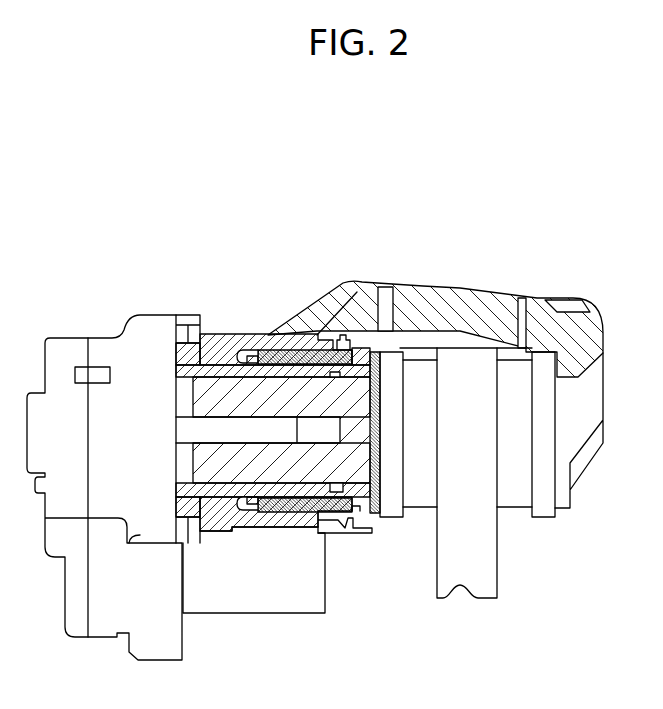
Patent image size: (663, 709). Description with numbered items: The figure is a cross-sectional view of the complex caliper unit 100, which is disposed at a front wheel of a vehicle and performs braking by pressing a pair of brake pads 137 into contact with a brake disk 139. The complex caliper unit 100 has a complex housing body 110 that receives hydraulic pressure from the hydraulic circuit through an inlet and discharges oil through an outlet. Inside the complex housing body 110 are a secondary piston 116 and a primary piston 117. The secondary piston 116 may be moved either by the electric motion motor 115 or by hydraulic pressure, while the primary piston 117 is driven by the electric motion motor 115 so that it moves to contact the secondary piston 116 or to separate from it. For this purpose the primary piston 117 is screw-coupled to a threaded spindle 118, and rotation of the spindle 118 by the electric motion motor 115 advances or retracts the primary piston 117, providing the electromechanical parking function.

The complex caliper unit 100 is at (315, 250).
The complex housing body 110 is at (358, 287).
The electric motion motor 115 is at (312, 587).
The secondary piston 116 is at (242, 500).
The primary piston 117 is at (285, 507).
The spindle 118 is at (228, 432).
The brake pads 137 is at (513, 427).
The brake disk 139 is at (483, 570).